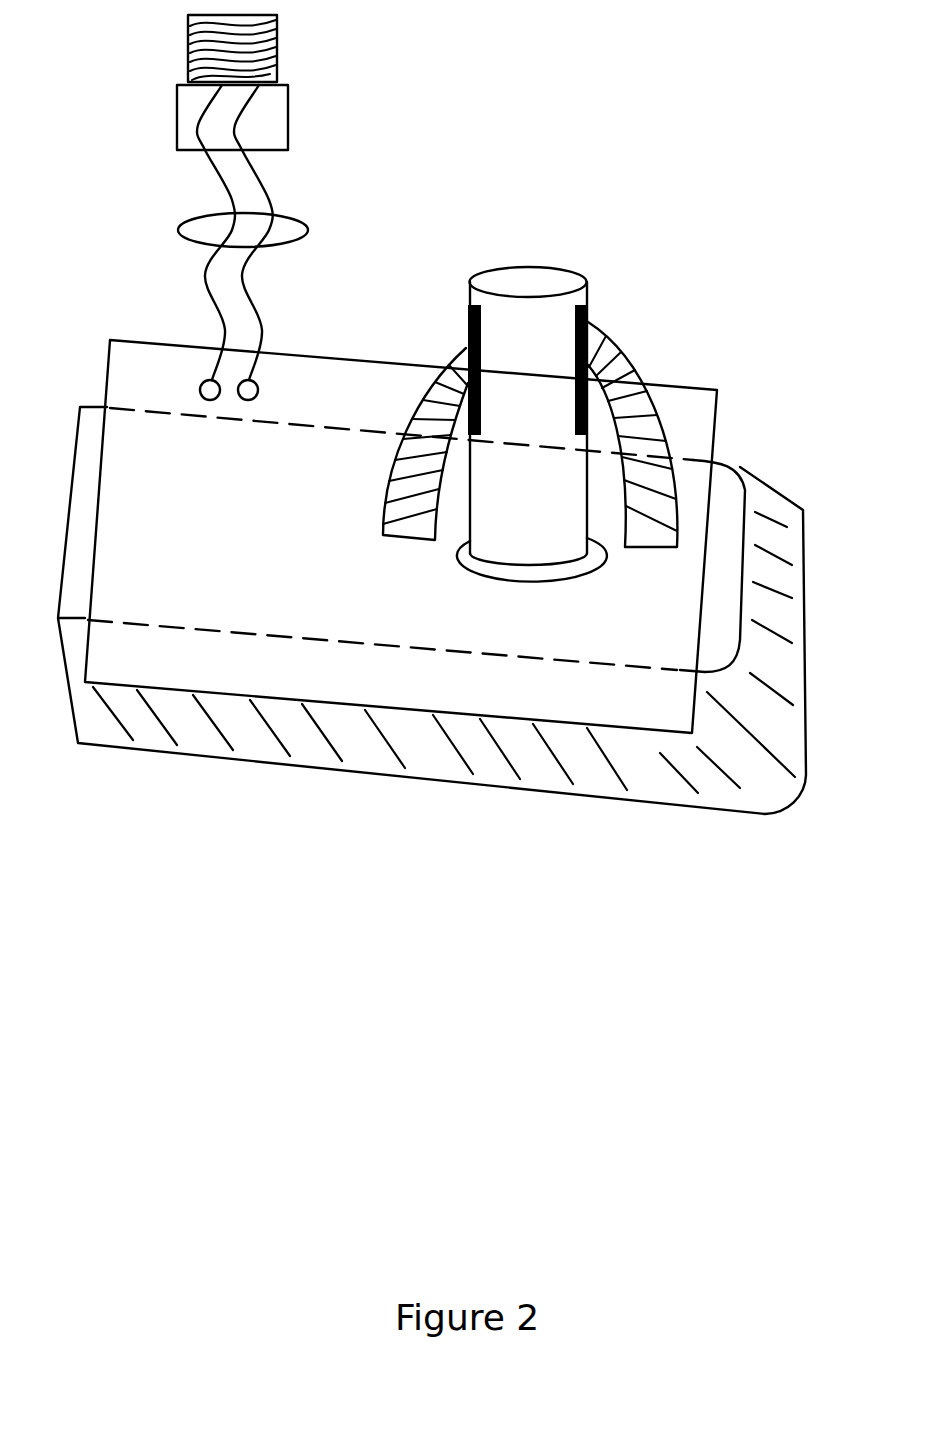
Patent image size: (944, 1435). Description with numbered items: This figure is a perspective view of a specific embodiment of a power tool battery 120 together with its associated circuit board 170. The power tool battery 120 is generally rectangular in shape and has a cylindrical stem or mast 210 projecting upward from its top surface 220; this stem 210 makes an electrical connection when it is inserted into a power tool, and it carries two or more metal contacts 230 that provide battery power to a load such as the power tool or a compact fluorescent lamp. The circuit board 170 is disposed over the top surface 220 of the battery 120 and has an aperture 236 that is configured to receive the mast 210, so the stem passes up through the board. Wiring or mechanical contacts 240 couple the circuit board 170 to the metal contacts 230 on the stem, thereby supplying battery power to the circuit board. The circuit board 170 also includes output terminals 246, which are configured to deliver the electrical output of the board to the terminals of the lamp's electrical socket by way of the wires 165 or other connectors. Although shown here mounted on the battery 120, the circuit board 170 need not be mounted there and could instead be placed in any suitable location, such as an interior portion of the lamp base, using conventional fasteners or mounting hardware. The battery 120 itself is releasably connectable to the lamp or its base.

The power tool battery 120 is at (783, 675).
The wires 165 is at (179, 232).
The circuit board 170 is at (700, 402).
The cylindrical stem or mast 210 is at (515, 282).
The top surface 220 is at (720, 488).
The metal contacts 230 is at (468, 337).
The aperture 236 is at (600, 553).
The wiring or mechanical contacts 240 is at (385, 508).
The output terminals 246 is at (203, 386).